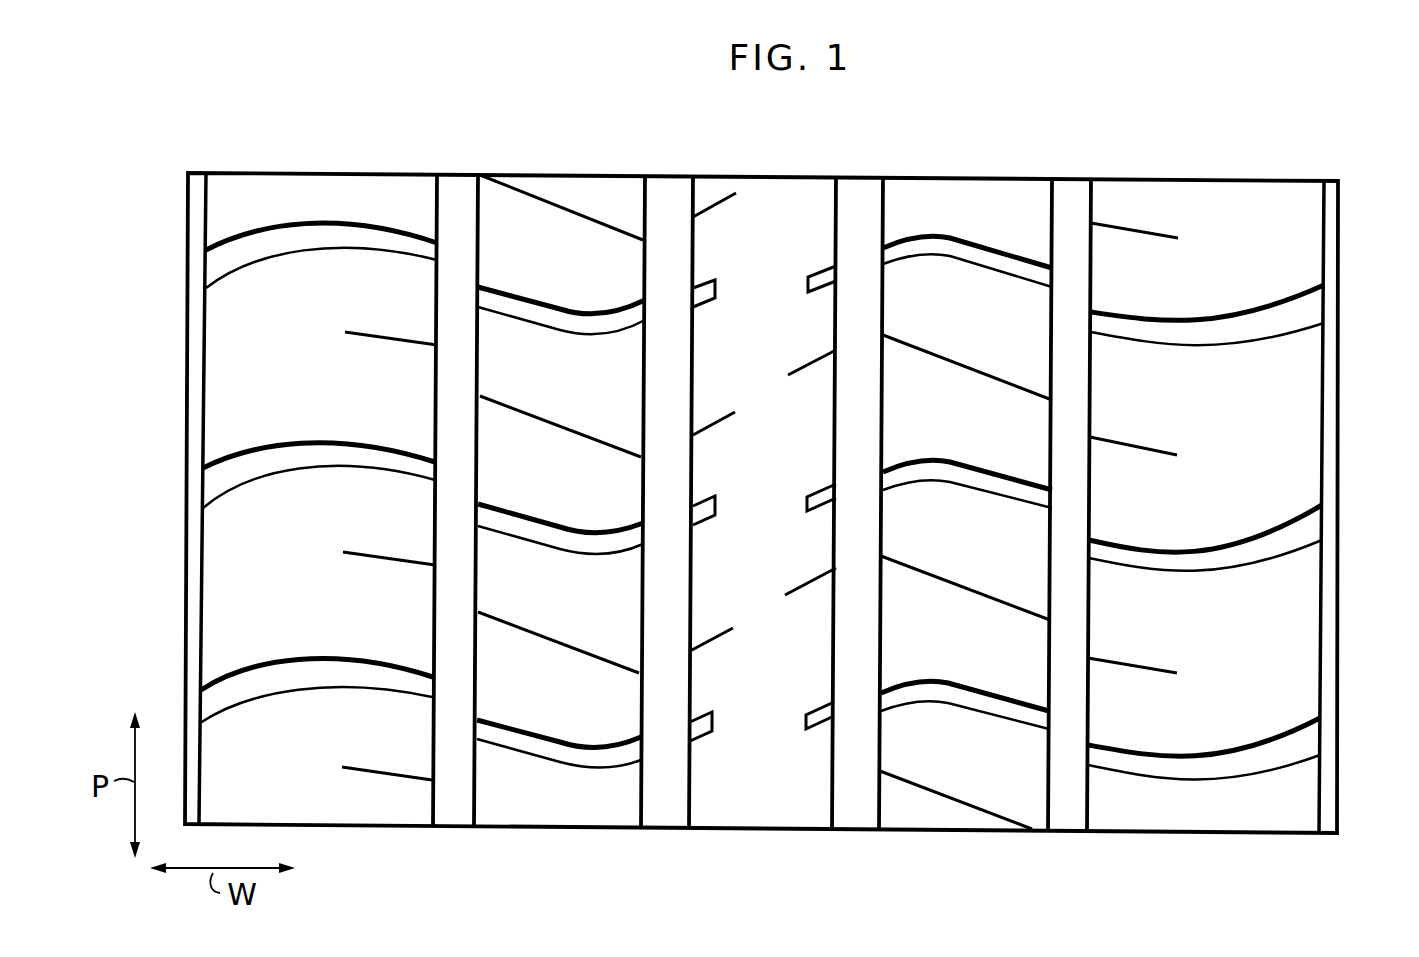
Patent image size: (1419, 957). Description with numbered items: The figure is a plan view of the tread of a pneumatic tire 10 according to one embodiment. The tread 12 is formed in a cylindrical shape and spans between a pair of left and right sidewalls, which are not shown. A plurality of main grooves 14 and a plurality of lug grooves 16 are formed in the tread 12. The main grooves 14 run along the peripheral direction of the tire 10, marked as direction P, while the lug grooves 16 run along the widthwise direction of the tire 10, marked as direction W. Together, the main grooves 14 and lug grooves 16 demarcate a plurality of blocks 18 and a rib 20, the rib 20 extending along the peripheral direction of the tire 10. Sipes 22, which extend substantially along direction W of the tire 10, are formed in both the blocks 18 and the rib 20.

The pneumatic tire 10 is at (576, 116).
The tread 12 is at (414, 198).
The main grooves 14 is at (457, 196).
The lug grooves 16 is at (828, 268).
The blocks 18 is at (232, 378).
The rib 20 is at (770, 755).
The sipes 22 is at (386, 338).